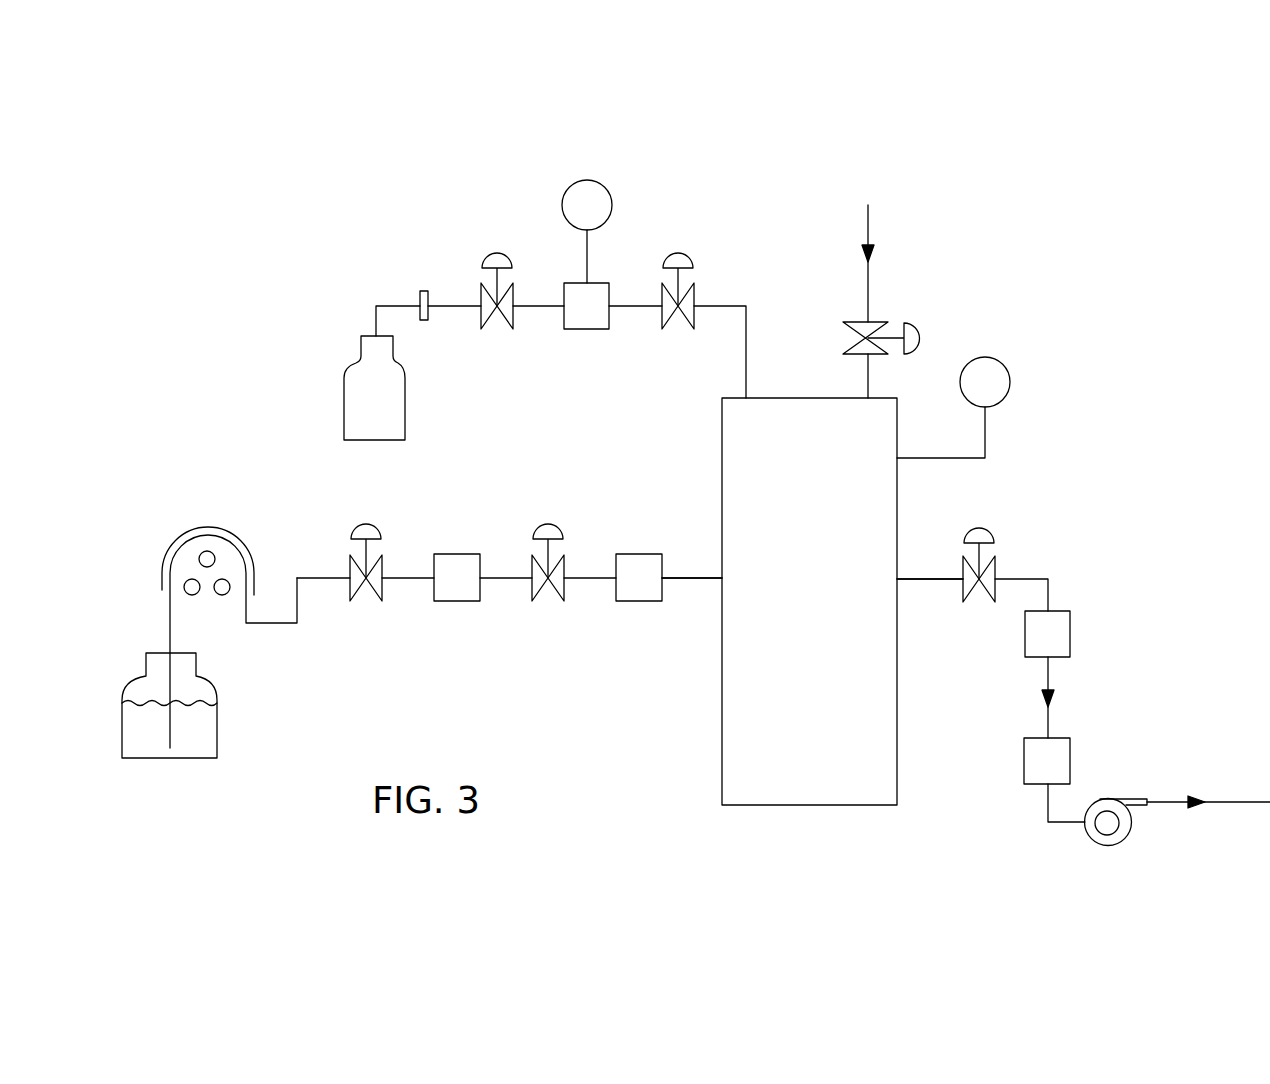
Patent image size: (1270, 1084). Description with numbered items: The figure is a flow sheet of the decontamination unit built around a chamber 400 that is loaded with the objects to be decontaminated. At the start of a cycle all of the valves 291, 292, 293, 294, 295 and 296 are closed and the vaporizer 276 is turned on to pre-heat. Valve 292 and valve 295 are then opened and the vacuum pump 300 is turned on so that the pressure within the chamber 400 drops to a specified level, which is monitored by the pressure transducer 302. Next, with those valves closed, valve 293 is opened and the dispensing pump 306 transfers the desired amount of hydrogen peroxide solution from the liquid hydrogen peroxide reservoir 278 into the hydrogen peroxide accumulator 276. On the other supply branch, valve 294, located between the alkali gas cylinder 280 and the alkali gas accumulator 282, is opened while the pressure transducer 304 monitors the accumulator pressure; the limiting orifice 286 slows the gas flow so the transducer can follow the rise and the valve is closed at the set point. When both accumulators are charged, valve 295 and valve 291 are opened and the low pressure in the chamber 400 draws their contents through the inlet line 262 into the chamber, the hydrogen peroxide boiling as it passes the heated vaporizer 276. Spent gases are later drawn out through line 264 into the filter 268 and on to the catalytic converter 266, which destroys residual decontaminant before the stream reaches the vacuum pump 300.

The chamber 400 is at (837, 562).
The alkali gas cylinder 280 is at (344, 385).
The limiting orifice 286 is at (424, 290).
The valve 294 is at (497, 252).
The alkali gas accumulator 282 is at (587, 329).
The pressure transducer 304 is at (575, 184).
The valve 295 is at (670, 254).
The valve 296 is at (923, 335).
The pressure transducer 302 is at (993, 362).
The dispensing pump 306 is at (205, 533).
The liquid hydrogen peroxide reservoir 278 is at (212, 730).
The valve 293 is at (365, 524).
The vaporizer 276 is at (458, 553).
The valve 291 is at (548, 524).
The inlet line 262 is at (693, 577).
The valve 292 is at (983, 530).
The line 264 is at (932, 580).
The filter 268 is at (1070, 628).
The catalytic converter 266 is at (1070, 758).
The vacuum pump 300 is at (1123, 837).